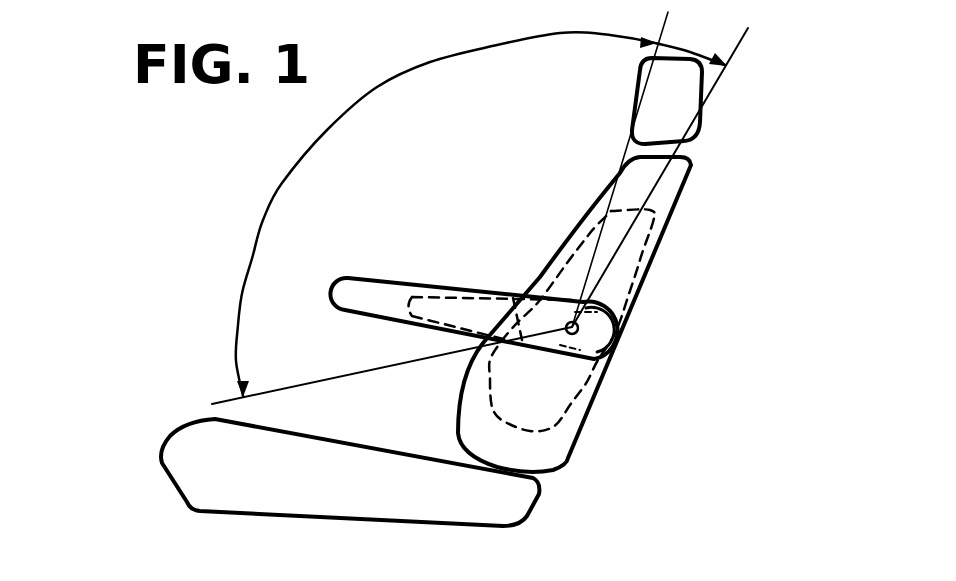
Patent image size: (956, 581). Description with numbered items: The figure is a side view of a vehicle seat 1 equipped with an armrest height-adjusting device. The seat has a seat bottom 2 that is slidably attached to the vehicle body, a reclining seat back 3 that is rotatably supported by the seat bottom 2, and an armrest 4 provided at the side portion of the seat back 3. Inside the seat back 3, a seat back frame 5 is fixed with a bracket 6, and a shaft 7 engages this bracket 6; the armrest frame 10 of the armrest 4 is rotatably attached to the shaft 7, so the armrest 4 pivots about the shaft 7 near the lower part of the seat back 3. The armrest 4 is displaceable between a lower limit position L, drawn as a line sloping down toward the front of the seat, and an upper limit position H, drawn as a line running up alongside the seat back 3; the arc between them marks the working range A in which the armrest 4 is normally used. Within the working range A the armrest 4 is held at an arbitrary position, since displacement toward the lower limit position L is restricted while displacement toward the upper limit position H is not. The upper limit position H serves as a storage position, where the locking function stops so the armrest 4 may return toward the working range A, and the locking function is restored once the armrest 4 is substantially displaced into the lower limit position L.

The vehicle seat 1 is at (700, 180).
The seat bottom 2 is at (267, 480).
The seat back 3 is at (660, 258).
The armrest 4 is at (367, 297).
The seat back frame 5 is at (632, 278).
The bracket 6 is at (587, 323).
The shaft 7 is at (600, 355).
The armrest frame 10 is at (392, 322).
The working range A is at (280, 182).
The upper limit position H is at (667, 165).
The lower limit position L is at (377, 372).